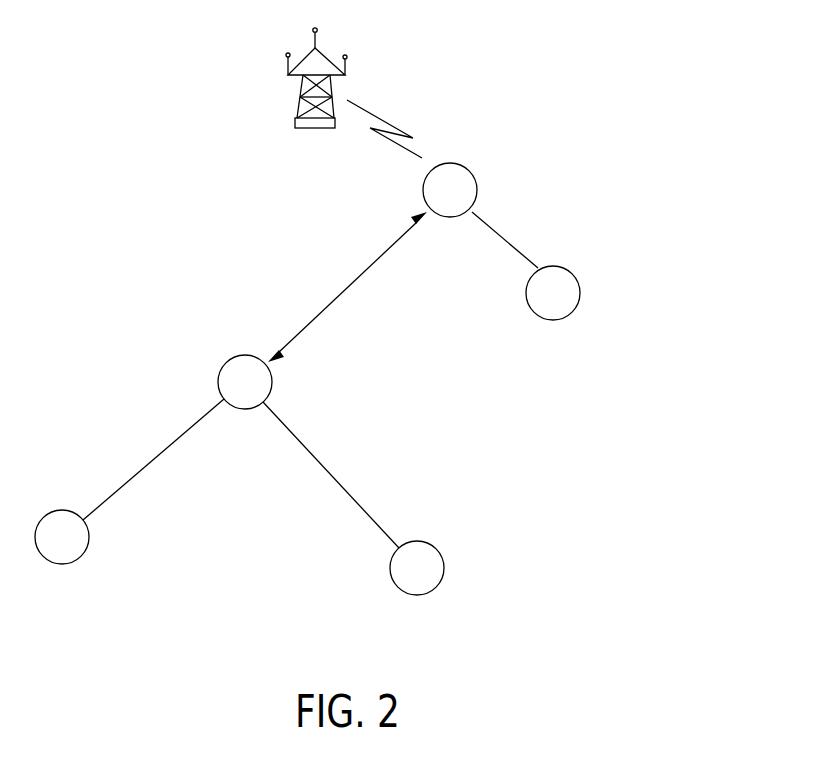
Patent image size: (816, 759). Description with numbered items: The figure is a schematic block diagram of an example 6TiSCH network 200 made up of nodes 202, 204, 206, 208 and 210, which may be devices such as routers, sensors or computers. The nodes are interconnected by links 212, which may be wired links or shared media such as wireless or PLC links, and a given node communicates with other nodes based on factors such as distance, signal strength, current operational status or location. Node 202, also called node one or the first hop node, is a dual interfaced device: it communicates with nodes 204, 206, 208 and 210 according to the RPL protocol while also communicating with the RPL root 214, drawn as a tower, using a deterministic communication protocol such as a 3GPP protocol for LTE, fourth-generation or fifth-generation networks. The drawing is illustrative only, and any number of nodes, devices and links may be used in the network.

The network 200 is at (598, 89).
The node 202 is at (478, 183).
The node 204 is at (272, 387).
The node 206 is at (90, 537).
The node 208 is at (441, 550).
The node 210 is at (580, 283).
The links 212 is at (504, 235).
The RPL root 214 is at (326, 53).